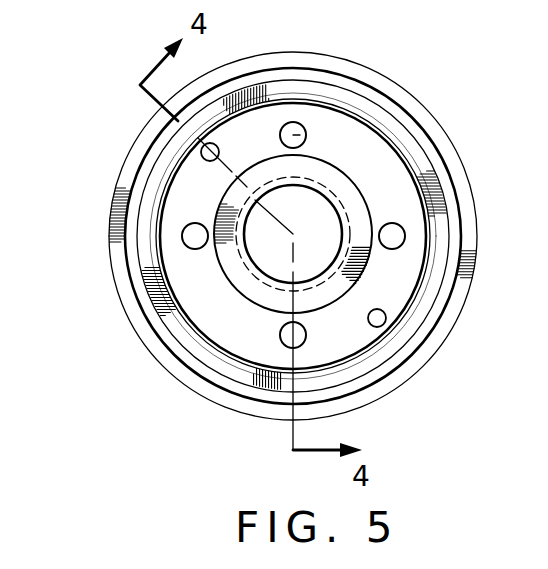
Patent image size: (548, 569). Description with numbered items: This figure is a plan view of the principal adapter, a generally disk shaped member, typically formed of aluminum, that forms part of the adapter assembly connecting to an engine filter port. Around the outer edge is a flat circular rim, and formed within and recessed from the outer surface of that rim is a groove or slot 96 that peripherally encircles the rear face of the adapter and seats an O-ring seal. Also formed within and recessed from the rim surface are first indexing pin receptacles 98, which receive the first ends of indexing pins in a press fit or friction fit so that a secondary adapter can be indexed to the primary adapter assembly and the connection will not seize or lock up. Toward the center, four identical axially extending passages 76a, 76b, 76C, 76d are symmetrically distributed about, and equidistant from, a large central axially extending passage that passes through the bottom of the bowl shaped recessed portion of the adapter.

The axially extending passage 76a is at (295, 134).
The axially extending passage 76b is at (302, 338).
The axially extending passage 76C is at (392, 236).
The axially extending passage 76d is at (195, 236).
The groove 96 is at (440, 197).
The first indexing pin receptacles 98 is at (200, 153).